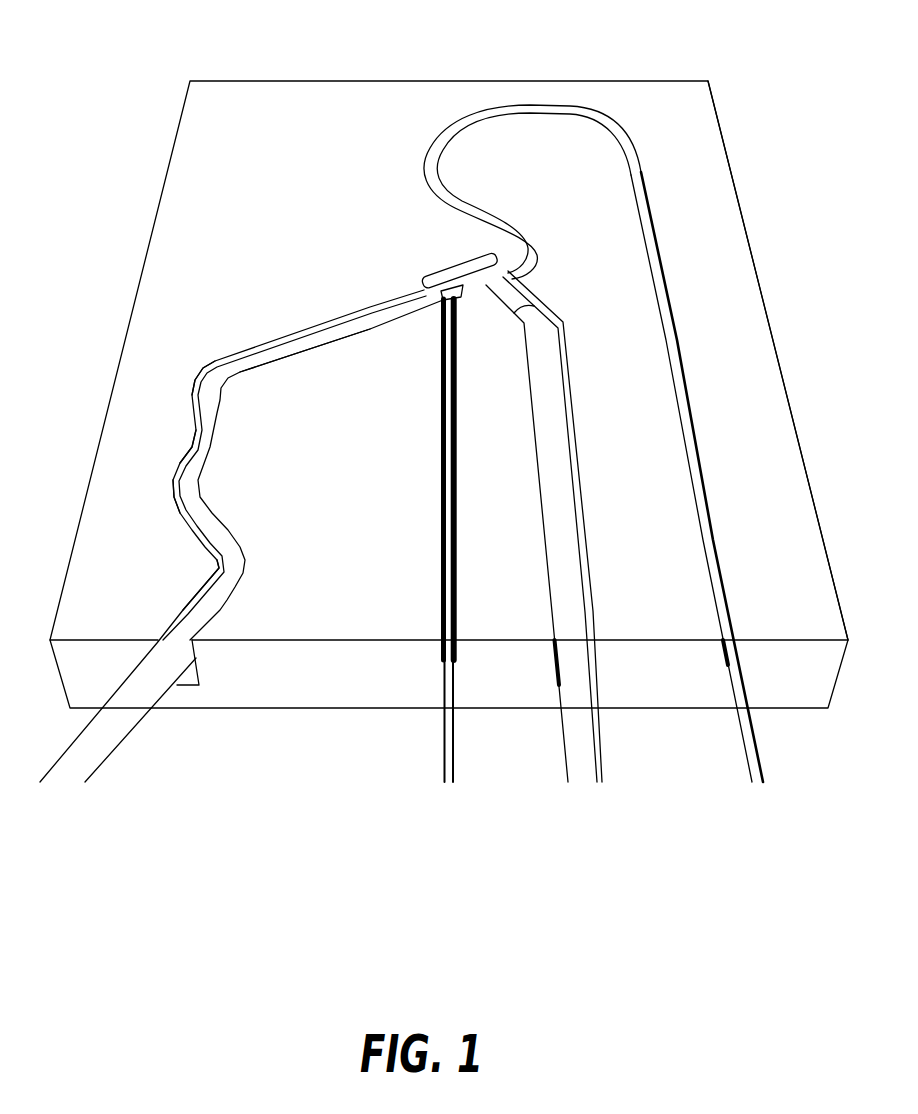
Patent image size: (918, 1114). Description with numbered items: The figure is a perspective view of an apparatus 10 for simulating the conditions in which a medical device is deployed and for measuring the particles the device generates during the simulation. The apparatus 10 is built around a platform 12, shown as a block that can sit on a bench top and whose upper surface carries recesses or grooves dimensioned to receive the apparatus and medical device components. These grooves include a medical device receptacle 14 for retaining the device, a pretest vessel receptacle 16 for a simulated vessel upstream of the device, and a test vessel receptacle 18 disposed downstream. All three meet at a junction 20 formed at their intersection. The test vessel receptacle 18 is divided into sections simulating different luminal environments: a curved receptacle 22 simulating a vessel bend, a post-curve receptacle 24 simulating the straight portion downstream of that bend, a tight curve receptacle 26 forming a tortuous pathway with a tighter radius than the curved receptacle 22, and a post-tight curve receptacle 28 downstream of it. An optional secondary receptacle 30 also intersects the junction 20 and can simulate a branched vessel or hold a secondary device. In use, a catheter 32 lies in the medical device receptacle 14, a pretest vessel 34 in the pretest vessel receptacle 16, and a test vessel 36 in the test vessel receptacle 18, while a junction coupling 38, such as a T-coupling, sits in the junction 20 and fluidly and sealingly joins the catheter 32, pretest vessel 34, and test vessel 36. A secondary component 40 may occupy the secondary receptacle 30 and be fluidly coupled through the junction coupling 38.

The apparatus 10 is at (449, 378).
The platform 12 is at (778, 360).
The medical device receptacle 14 is at (767, 477).
The pretest vessel receptacle 16 is at (695, 526).
The test vessel receptacle 18 is at (241, 459).
The junction 20 is at (355, 162).
The curved receptacle 22 is at (137, 336).
The post-curve receptacle 24 is at (119, 425).
The tight curve receptacle 26 is at (103, 480).
The post-tight curve receptacle 28 is at (114, 557).
The secondary receptacle 30 is at (384, 540).
The catheter 32 is at (645, 219).
The pretest vessel 34 is at (515, 581).
The test vessel 36 is at (228, 227).
The junction coupling 38 is at (443, 151).
The secondary component 40 is at (338, 540).